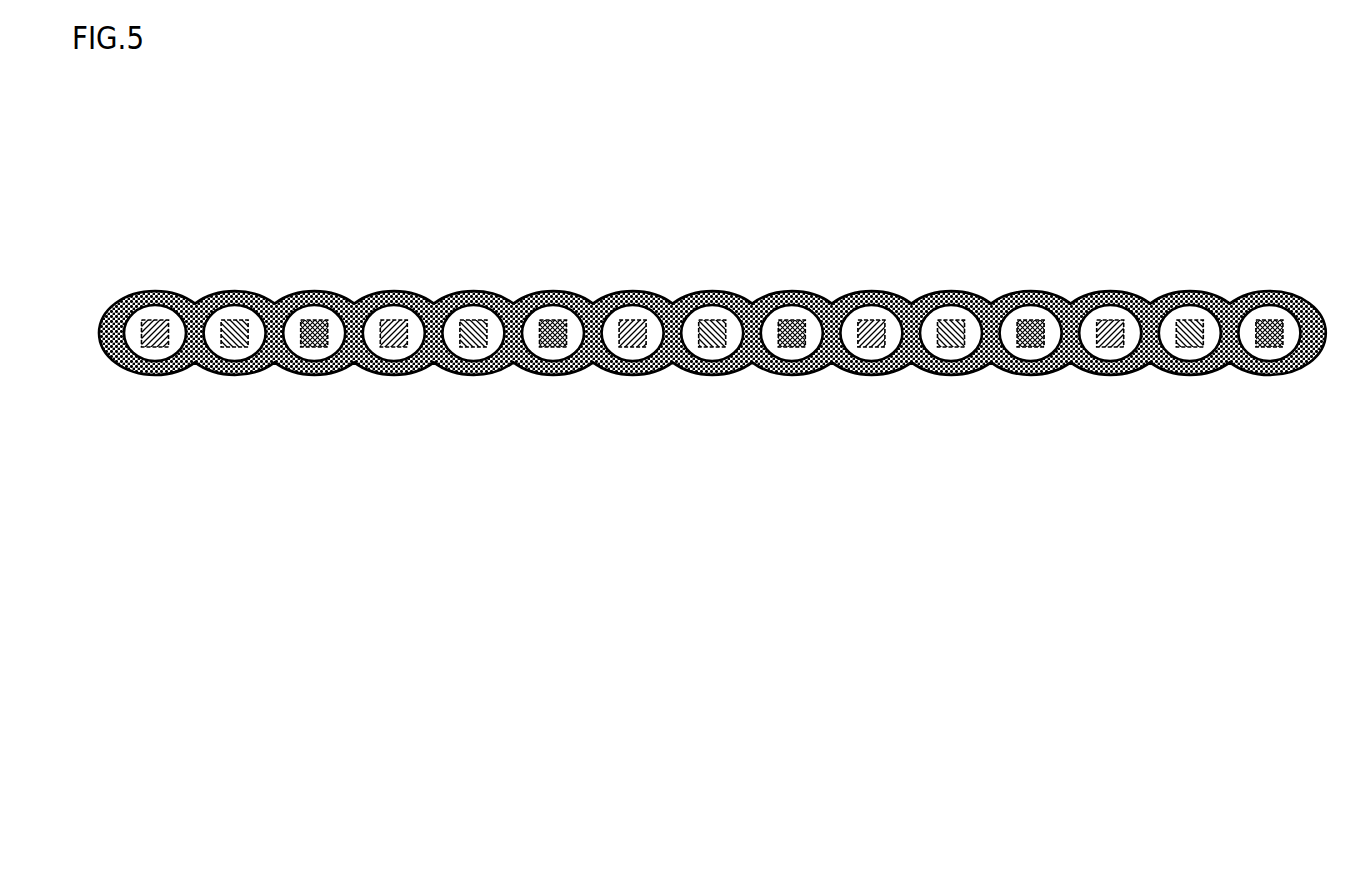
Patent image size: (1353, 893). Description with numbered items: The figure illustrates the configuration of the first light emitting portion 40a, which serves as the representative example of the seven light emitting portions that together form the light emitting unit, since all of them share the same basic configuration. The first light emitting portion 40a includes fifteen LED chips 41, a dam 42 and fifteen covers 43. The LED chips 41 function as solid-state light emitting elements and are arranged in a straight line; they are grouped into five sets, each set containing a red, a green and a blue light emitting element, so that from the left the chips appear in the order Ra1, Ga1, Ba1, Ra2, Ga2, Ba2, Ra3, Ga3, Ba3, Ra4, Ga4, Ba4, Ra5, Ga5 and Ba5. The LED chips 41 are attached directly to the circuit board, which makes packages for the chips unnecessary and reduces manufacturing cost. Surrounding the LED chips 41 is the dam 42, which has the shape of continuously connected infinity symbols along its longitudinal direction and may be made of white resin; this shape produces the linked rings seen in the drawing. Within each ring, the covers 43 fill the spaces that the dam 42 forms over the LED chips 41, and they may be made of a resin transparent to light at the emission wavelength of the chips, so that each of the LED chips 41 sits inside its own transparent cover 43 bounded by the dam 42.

The first light emitting portion 40a is at (1053, 212).
The LED chips 41 is at (736, 415).
The dam 42 is at (117, 320).
The covers 43 is at (178, 333).
The red LED chip of the first set Ra1 is at (159, 348).
The green LED chip of the first set Ga1 is at (239, 348).
The blue LED chip of the first set Ba1 is at (318, 348).
The red LED chip of the second set Ra2 is at (398, 348).
The green LED chip of the second set Ga2 is at (477, 348).
The blue LED chip of the second set Ba2 is at (557, 348).
The red LED chip of the third set Ra3 is at (637, 348).
The green LED chip of the third set Ga3 is at (716, 348).
The blue LED chip of the third set Ba3 is at (796, 348).
The red LED chip of the fourth set Ra4 is at (875, 348).
The green LED chip of the fourth set Ga4 is at (955, 348).
The blue LED chip of the fourth set Ba4 is at (1035, 348).
The red LED chip of the fifth set Ra5 is at (1114, 348).
The green LED chip of the fifth set Ga5 is at (1194, 348).
The blue LED chip of the fifth set Ba5 is at (1273, 348).